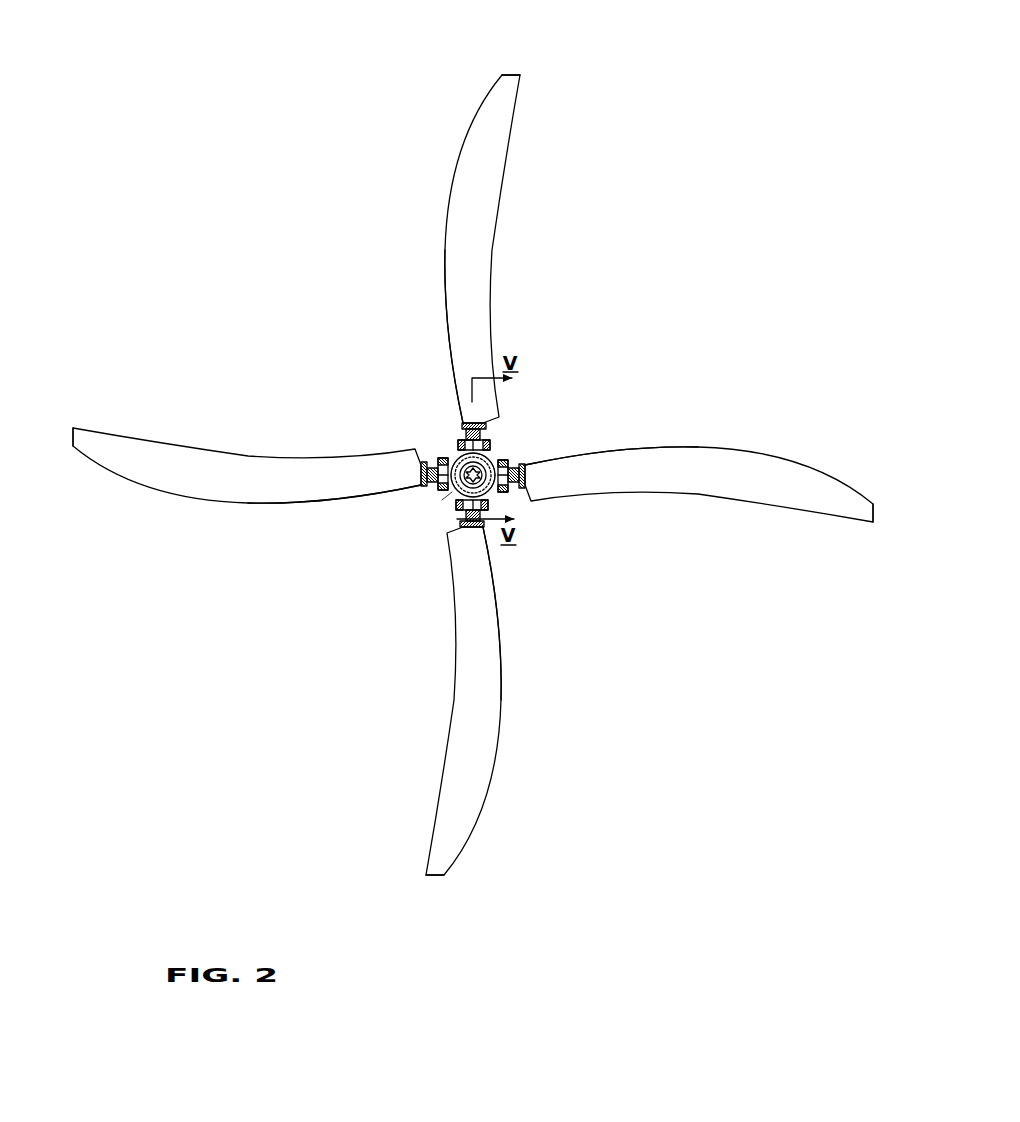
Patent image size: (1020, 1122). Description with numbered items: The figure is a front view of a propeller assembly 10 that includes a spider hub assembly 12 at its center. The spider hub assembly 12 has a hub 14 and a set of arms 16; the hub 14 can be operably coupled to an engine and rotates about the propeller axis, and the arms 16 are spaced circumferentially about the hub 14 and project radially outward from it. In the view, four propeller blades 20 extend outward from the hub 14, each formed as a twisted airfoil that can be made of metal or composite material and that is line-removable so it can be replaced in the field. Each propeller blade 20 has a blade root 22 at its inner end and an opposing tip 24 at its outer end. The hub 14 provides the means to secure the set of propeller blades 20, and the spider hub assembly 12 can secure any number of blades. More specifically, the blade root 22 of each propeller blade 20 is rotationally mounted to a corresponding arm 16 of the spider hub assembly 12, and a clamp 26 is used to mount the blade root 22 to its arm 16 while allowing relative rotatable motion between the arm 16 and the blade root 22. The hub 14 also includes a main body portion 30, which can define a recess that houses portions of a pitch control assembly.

The propeller assembly 10 is at (268, 202).
The spider hub assembly 12 is at (532, 437).
The hub 14 is at (500, 496).
The set of arms 16 is at (442, 457).
The propeller blades 20 is at (447, 152).
The blade roots 22 is at (491, 432).
The tips 24 is at (516, 75).
The clamp 26 is at (453, 452).
The main body portion 30 is at (445, 491).